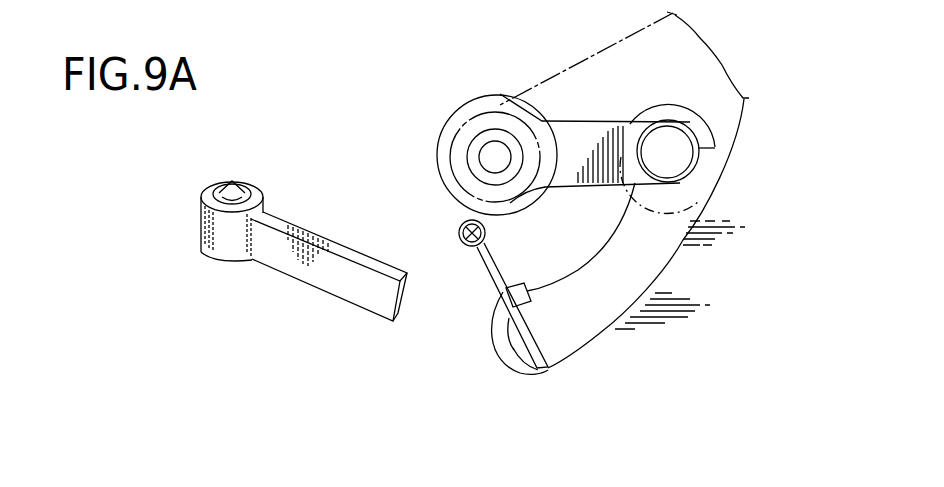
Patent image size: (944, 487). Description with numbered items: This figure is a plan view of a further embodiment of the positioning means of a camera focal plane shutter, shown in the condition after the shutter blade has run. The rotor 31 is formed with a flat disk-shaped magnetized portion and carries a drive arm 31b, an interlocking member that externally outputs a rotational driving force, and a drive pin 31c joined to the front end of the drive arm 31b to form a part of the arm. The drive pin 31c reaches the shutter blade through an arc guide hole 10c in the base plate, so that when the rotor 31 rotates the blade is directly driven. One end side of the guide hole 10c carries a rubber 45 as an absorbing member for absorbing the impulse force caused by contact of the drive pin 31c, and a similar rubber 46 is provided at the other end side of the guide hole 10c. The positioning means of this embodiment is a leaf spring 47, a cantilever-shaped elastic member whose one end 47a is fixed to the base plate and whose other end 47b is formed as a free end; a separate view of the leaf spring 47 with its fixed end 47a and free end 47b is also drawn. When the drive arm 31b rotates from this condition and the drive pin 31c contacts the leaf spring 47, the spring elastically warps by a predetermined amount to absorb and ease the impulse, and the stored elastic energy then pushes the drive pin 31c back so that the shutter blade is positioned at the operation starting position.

The arc guide hole 10c is at (659, 268).
The rotor 31 is at (621, 118).
The drive arm 31b is at (588, 118).
The drive pin 31c is at (673, 153).
The rubber 46 is at (692, 112).
The rubber 45 is at (550, 375).
The leaf spring 47 is at (382, 272).
The one end of leaf spring 47a is at (214, 243).
The other end of leaf spring 47b is at (347, 277).